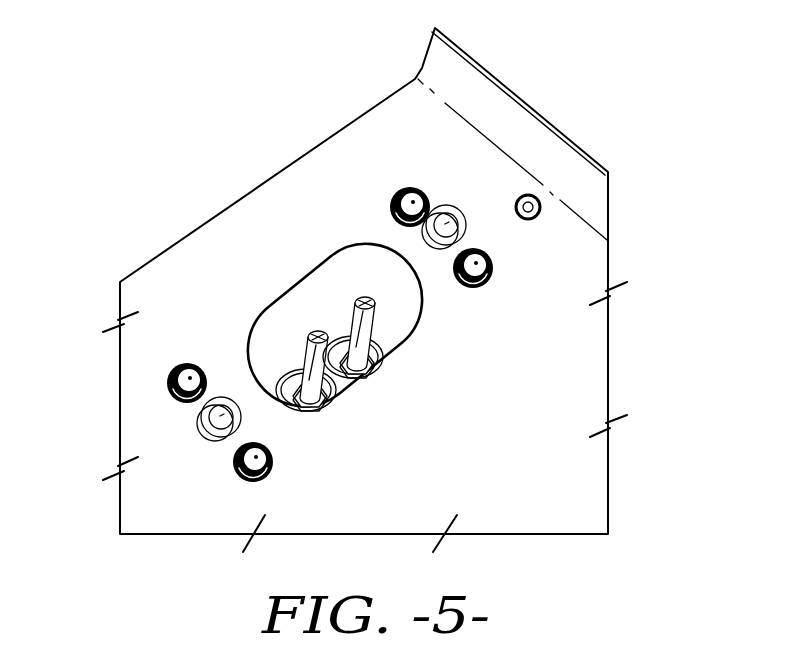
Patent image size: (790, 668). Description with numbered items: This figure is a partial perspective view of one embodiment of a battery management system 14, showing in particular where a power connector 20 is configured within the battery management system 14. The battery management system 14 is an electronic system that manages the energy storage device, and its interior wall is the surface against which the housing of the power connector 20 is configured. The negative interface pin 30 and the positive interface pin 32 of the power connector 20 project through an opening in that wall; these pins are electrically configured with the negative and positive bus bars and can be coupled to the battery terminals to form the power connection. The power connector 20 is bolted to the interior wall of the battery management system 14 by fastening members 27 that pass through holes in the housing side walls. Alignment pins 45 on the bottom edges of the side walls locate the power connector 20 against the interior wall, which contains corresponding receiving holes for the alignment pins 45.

The battery management system 14 is at (565, 365).
The power connector 20 is at (338, 315).
The fastening members 27 is at (410, 187).
The negative interface pin 30 is at (313, 330).
The positive interface pin 32 is at (360, 297).
The alignment pins 45 is at (443, 210).